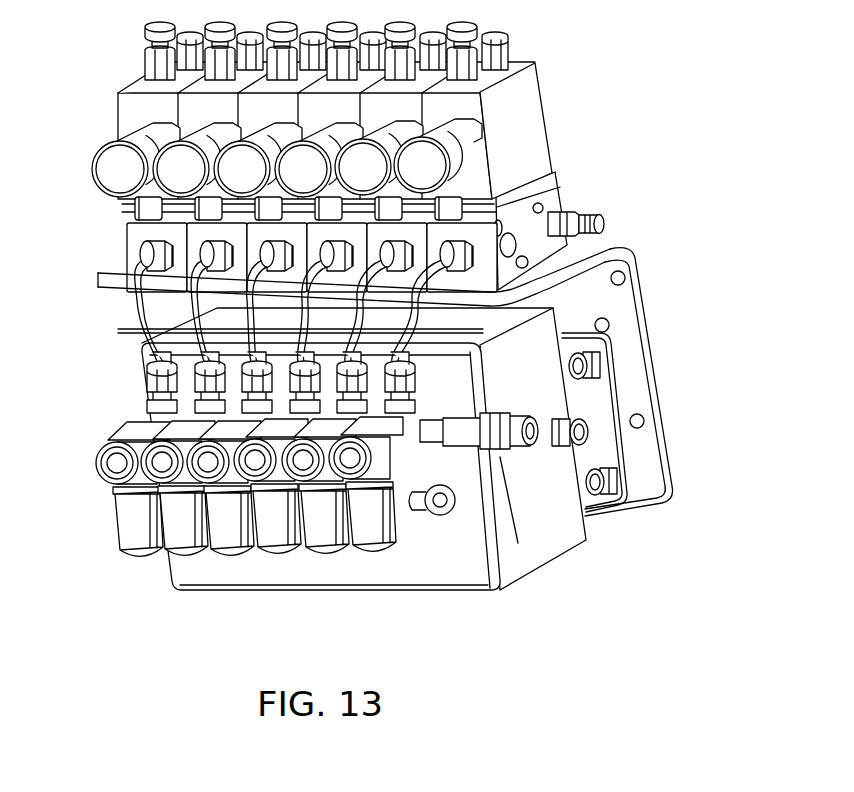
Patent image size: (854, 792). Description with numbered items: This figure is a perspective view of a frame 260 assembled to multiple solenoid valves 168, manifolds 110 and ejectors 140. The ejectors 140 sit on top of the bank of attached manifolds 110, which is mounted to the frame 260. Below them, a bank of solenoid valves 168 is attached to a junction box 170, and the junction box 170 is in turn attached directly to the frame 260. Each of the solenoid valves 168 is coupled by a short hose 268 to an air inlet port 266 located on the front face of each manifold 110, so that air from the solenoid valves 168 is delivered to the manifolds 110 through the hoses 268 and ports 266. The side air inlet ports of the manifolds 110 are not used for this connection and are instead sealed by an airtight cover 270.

The ejector 140 is at (546, 102).
The manifold 110 is at (560, 192).
The airtight cover 270 is at (562, 194).
The air inlet port 266 is at (142, 256).
The short hose 268 is at (143, 310).
The frame 260 is at (655, 380).
The solenoid valve 168 is at (112, 523).
The junction box 170 is at (542, 565).